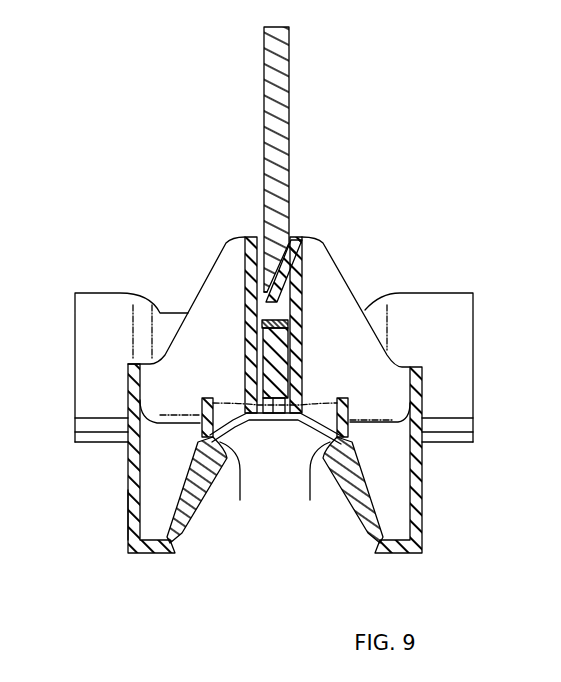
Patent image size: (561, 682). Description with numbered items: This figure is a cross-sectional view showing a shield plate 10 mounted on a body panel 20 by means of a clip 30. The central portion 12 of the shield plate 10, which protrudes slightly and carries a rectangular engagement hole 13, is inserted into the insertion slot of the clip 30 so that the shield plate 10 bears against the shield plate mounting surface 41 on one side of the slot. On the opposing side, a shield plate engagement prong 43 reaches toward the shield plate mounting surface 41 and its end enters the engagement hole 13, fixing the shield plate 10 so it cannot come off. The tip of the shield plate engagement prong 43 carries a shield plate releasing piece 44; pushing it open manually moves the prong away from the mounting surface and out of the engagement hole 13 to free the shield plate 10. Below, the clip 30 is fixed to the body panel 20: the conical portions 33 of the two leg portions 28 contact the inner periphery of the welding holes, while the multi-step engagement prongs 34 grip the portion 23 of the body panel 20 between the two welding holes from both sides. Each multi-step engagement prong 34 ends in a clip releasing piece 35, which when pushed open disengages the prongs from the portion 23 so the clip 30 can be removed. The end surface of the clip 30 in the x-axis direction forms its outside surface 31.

The shield plate 10 is at (292, 112).
The central portion 12 is at (272, 393).
The engagement hole 13 is at (300, 282).
The body panel 20 is at (99, 290).
The portion 23 is at (288, 417).
The leg portions 28 is at (127, 490).
The clip 30 is at (336, 240).
The outside surface 31 is at (128, 392).
The conical portions 33 is at (200, 497).
The multi-step engagement prongs 34 is at (218, 440).
The clip releasing piece 35 is at (262, 324).
The shield plate mounting surface 41 is at (265, 287).
The shield plate engagement prongs 43 is at (250, 312).
The shield plate releasing piece 44 is at (299, 262).